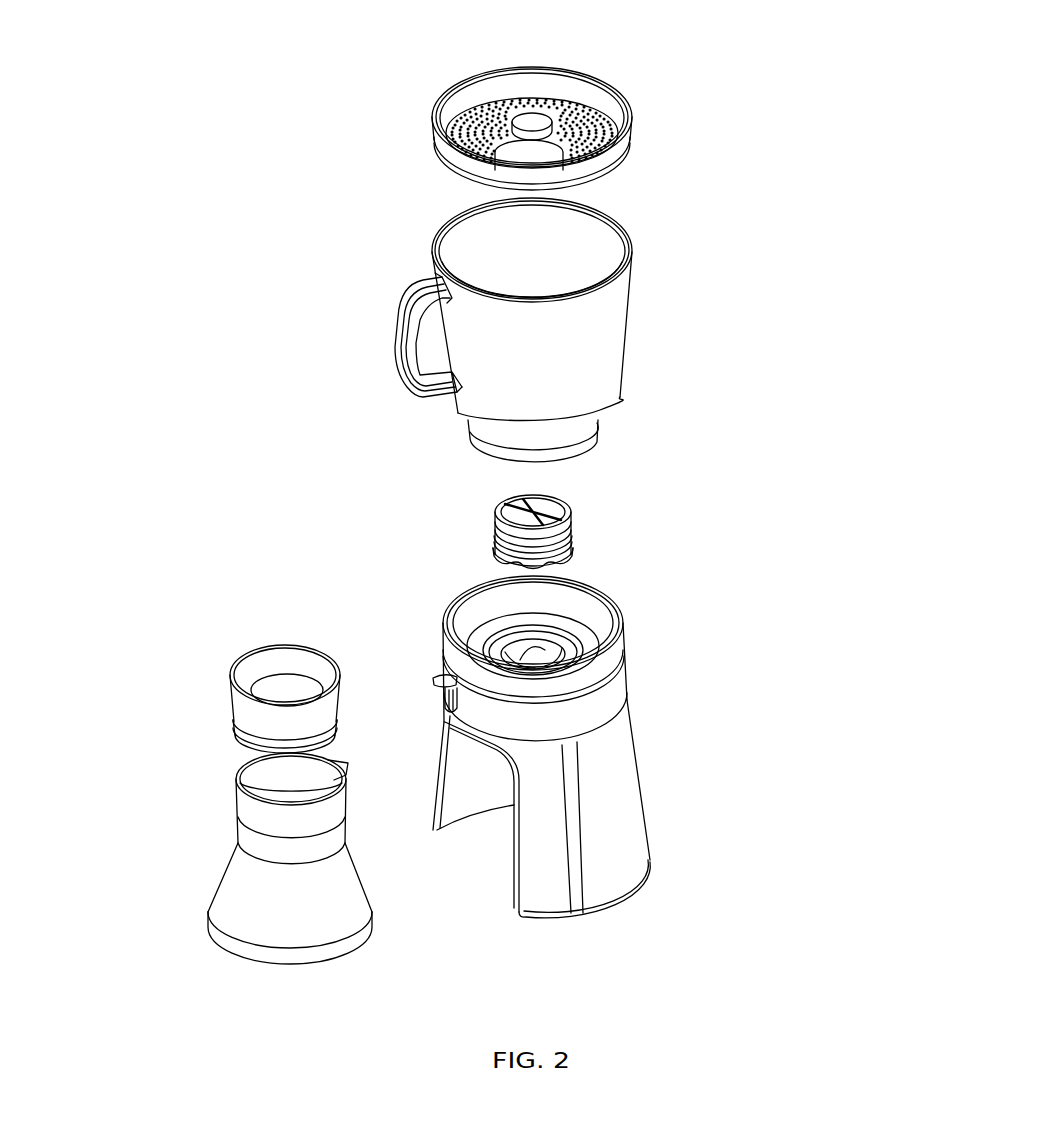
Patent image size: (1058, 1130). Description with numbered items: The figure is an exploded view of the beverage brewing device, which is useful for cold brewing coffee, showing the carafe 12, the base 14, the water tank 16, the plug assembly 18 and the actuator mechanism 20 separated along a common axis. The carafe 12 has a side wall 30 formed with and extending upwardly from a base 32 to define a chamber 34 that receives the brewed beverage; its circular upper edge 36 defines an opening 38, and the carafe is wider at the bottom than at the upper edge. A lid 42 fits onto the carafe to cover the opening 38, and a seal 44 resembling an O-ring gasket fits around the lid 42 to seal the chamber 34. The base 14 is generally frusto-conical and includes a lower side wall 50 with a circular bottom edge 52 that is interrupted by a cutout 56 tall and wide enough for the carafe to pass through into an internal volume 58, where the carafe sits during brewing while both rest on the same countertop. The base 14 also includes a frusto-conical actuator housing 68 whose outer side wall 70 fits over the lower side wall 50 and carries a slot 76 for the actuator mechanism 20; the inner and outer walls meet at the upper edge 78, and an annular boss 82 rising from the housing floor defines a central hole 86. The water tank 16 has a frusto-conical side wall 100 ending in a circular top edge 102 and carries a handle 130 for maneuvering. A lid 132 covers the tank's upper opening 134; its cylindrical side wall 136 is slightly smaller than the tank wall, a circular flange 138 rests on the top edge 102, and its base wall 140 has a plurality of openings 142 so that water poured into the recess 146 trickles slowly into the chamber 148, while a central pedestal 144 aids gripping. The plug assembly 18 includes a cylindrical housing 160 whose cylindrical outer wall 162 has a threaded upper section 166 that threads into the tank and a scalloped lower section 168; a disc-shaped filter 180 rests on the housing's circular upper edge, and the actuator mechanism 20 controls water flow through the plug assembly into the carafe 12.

The carafe 12 is at (180, 936).
The base 14 is at (682, 745).
The water tank 16 is at (672, 254).
The plug assembly 18 is at (585, 488).
The actuator mechanism 20 is at (625, 640).
The side wall 30 is at (237, 807).
The base 32 is at (253, 962).
The chamber 34 is at (280, 788).
The upper edge 36 is at (245, 763).
The opening 38 is at (250, 767).
The lid 42 is at (273, 622).
The seal 44 is at (240, 717).
The lower side wall 50 is at (630, 830).
The bottom edge 52 is at (585, 915).
The cutout 56 is at (517, 882).
The internal volume 58 is at (475, 829).
The actuator housing 68 is at (667, 663).
The outer side wall 70 is at (447, 640).
The slot 76 is at (440, 703).
The upper edge 78 is at (622, 632).
The annular boss 82 is at (625, 612).
The central hole 86 is at (565, 620).
The side wall 100 is at (575, 355).
The top edge 102 is at (628, 240).
The handle 130 is at (400, 368).
The lid 132 is at (666, 95).
The upper opening 134 is at (585, 233).
The cylindrical side wall 136 is at (615, 158).
The circular flange 138 is at (440, 137).
The base wall 140 is at (463, 133).
The openings 142 is at (540, 107).
The central pedestal 144 is at (520, 128).
The recess 146 is at (588, 97).
The chamber 148 is at (468, 250).
The housing 160 is at (480, 501).
The cylindrical outer wall 162 is at (497, 543).
The threaded upper section 166 is at (497, 518).
The lower section 168 is at (570, 548).
The filter 180 is at (555, 492).